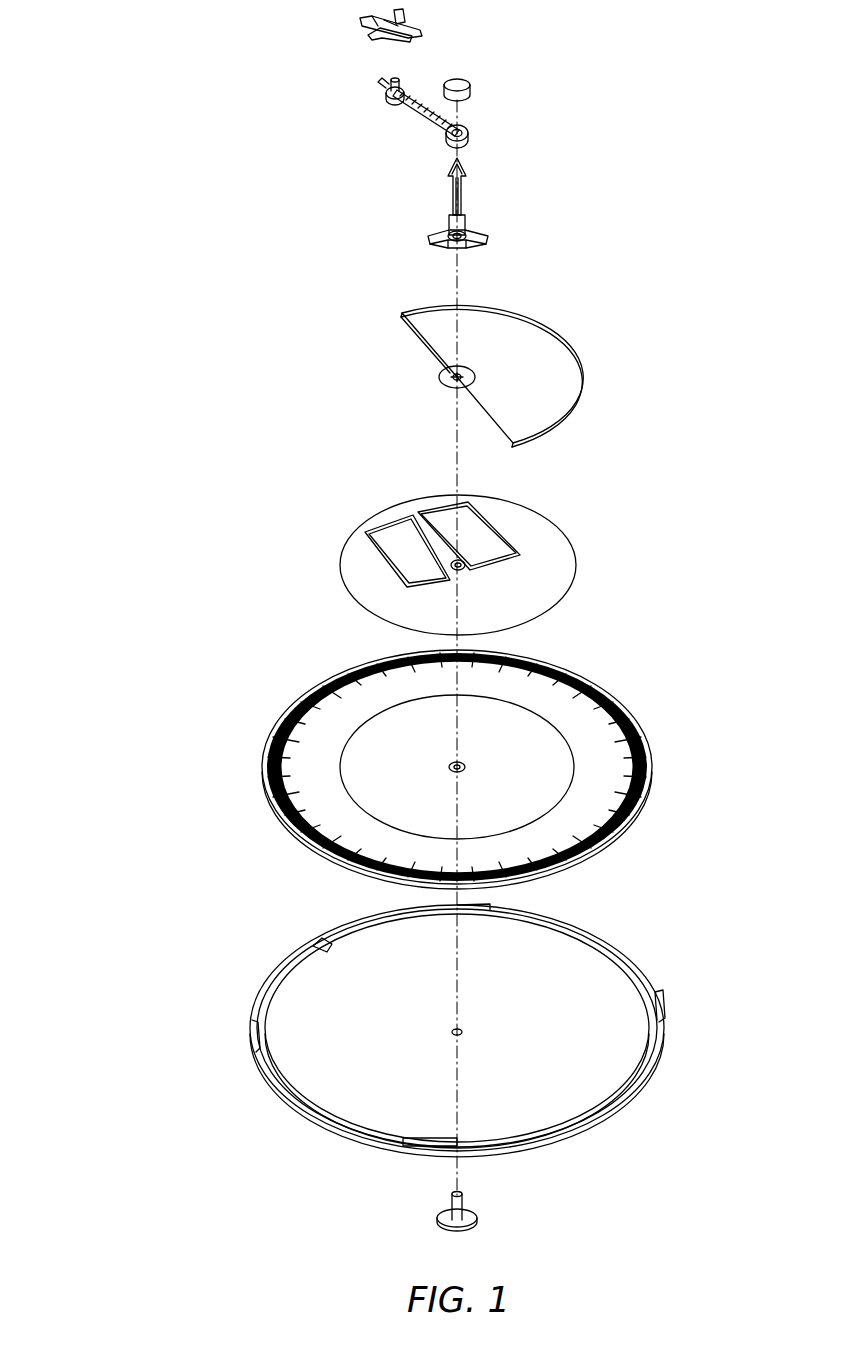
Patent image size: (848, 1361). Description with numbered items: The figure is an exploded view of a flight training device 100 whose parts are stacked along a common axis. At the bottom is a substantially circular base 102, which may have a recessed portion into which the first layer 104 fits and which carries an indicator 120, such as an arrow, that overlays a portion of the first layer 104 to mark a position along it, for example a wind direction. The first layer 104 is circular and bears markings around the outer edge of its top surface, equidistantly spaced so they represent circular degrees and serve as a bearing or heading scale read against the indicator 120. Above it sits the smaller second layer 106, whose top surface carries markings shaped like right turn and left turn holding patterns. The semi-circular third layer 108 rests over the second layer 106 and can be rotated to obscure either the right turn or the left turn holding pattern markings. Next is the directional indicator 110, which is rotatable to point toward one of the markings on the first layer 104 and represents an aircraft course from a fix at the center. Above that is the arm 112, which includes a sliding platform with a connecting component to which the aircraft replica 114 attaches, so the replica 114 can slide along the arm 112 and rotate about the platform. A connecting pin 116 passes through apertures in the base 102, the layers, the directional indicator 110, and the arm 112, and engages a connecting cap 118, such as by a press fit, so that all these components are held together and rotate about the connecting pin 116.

The flight training device 100 is at (119, 95).
The base 102 is at (485, 1030).
The first layer 104 is at (654, 771).
The second layer 106 is at (578, 566).
The third layer 108 is at (583, 378).
The directional indicator 110 is at (488, 240).
The arm 112 is at (468, 130).
The aircraft replica 114 is at (420, 34).
The connecting pin 116 is at (478, 1216).
The connecting cap 118 is at (470, 93).
The indicator 120 is at (318, 945).